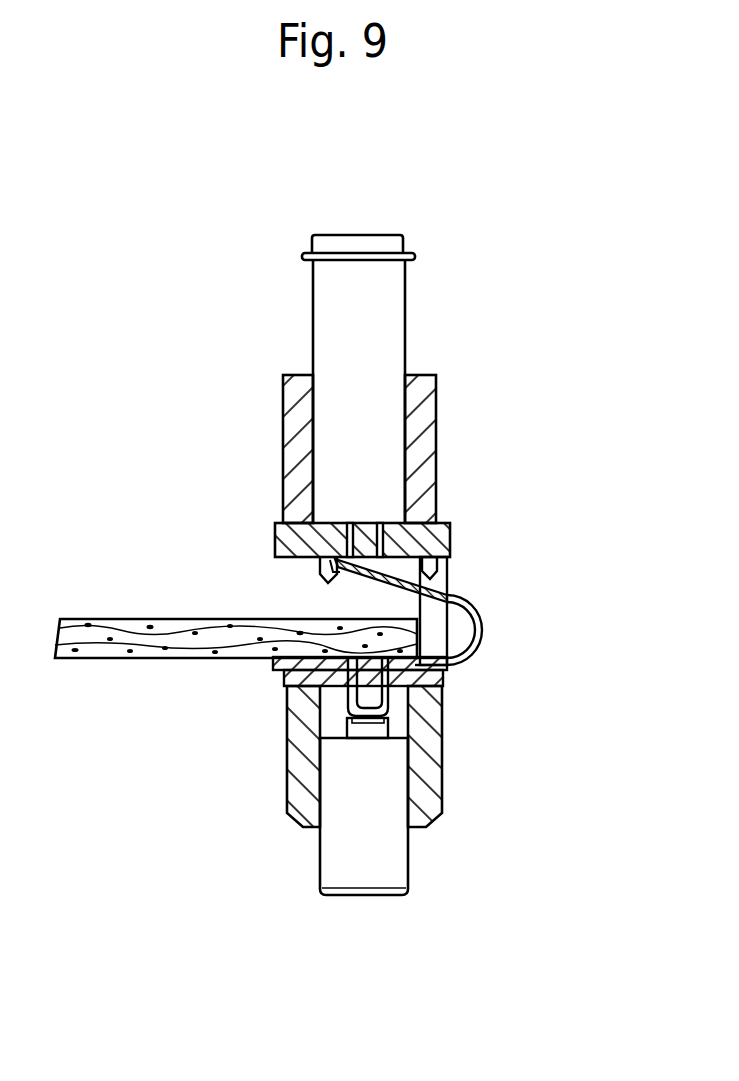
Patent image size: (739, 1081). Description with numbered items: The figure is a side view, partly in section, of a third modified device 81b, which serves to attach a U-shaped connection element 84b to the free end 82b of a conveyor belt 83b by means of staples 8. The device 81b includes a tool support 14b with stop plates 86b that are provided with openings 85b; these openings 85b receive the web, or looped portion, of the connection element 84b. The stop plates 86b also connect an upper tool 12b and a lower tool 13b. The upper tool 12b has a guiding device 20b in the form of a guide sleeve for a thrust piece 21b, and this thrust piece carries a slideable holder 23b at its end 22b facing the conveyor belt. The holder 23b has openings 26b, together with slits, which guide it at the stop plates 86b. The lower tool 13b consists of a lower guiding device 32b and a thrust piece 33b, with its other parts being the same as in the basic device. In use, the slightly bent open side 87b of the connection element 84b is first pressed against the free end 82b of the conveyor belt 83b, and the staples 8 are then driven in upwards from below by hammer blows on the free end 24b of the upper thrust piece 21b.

The device 81b is at (184, 245).
The free end of the upper thrust piece 24b is at (360, 245).
The thrust piece 21b is at (393, 320).
The upper tool 12b is at (445, 390).
The guiding device 20b is at (427, 443).
The end of the thrust piece 22b is at (328, 493).
The holder 23b is at (290, 535).
The openings 26b is at (378, 547).
The tool support 14b is at (452, 578).
The openings 85b is at (440, 620).
The slightly bent open side 87b is at (420, 588).
The U-shaped connection element 84b is at (483, 628).
The stop plates 86b is at (450, 642).
The free end of the conveyor belt 82b is at (295, 629).
The conveyor belt 83b is at (130, 628).
The lower tool 13b is at (448, 800).
The lower guiding device 32b is at (300, 797).
The thrust piece 33b is at (397, 848).
The staples 8 is at (343, 697).